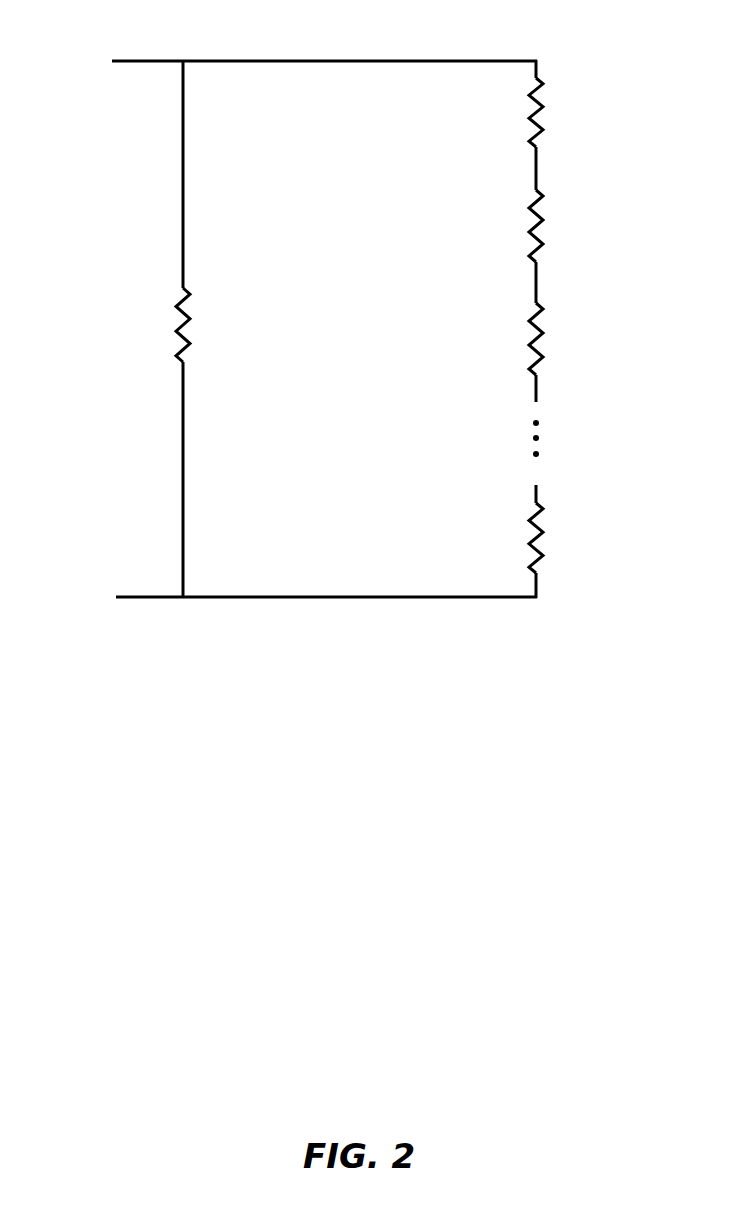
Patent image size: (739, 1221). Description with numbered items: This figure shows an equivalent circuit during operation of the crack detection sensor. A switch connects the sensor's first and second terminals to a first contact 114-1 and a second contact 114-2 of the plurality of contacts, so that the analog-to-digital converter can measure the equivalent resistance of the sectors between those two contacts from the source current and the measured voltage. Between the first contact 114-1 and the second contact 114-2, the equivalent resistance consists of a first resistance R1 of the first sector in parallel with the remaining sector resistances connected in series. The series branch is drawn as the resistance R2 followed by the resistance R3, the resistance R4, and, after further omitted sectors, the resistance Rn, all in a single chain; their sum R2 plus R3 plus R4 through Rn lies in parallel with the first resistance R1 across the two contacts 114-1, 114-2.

The first contact 114-1 is at (148, 61).
The second contact 114-2 is at (138, 597).
The first resistance R1 is at (162, 329).
The resistance of second sector R2 is at (557, 125).
The resistance of third sector R3 is at (557, 246).
The resistance of fourth sector R4 is at (557, 352).
The resistance of nth sector Rn is at (562, 541).